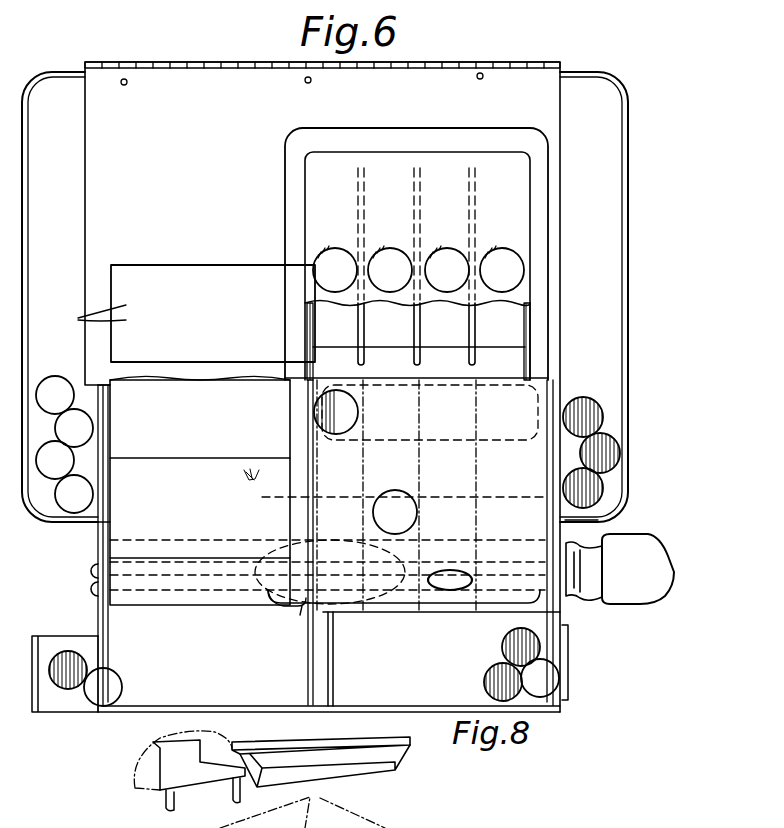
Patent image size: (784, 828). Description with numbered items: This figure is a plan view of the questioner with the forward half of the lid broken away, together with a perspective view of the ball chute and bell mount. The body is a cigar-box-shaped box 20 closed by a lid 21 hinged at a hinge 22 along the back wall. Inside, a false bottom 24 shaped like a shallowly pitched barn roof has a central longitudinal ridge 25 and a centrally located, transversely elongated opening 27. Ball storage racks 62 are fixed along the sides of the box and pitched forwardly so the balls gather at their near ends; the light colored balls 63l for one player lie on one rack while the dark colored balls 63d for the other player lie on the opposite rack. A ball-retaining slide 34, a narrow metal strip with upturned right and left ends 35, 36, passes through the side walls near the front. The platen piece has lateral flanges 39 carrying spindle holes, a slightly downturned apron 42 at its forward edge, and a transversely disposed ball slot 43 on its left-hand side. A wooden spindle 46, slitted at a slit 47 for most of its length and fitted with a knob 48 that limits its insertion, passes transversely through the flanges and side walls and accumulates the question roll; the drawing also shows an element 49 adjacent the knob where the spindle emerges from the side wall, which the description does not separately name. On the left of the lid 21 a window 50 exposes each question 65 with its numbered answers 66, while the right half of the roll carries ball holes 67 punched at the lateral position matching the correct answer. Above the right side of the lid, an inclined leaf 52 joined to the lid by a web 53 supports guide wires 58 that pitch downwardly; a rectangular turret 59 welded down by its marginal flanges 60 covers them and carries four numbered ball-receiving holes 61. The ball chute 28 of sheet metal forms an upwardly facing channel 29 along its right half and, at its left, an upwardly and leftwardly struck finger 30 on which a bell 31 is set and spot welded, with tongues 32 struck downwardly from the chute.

In FIG. 6, the box 20 is at (614, 520).
In FIG. 6, the lid 21 is at (493, 100).
In FIG. 6, the hinge 22 is at (440, 62).
In FIG. 6, the false bottom 24 is at (153, 627).
In FIG. 6, the central longitudinal ridge 25 is at (334, 673).
In FIG. 6, the transversely elongated opening 27 is at (302, 612).
In FIG. 8, the ball chute 28 is at (408, 750).
In FIG. 8, the channel 29 is at (300, 746).
In FIG. 8, the finger 30 is at (196, 744).
In FIG. 8, the bell 31 is at (134, 790).
In FIG. 8, the tongues 32 is at (175, 800).
In FIG. 6, the ball-retaining slide 34 is at (70, 714).
In FIG. 6, the upturned right end 35 is at (570, 690).
In FIG. 6, the upturned left end 36 is at (34, 714).
In FIG. 6, the lateral flanges 39 is at (108, 652).
In FIG. 6, the apron 42 is at (324, 540).
In FIG. 6, the ball slot 43 is at (437, 440).
In FIG. 6, the spindle 46 is at (91, 590).
In FIG. 6, the slit 47 is at (91, 574).
In FIG. 6, the knob 48 is at (660, 578).
In FIG. 6, the knob stem 49 is at (580, 600).
In FIG. 6, the window 50 is at (250, 268).
In FIG. 6, the leaf 52 is at (530, 322).
In FIG. 6, the web 53 is at (530, 360).
In FIG. 6, the guide wires 58 is at (472, 322).
In FIG. 6, the turret 59 is at (525, 208).
In FIG. 6, the marginal flanges 60 is at (538, 219).
In FIG. 6, the ball-receiving holes 61 is at (465, 286).
In FIG. 6, the ball storage racks 62 is at (57, 232).
In FIG. 6, the light colored balls 63l is at (632, 672).
In FIG. 6, the dark colored balls 63d is at (40, 613).
In FIG. 6, the questions 65 is at (152, 280).
In FIG. 6, the answers 66 is at (92, 316).
In FIG. 6, the ball holes 67 is at (332, 434).